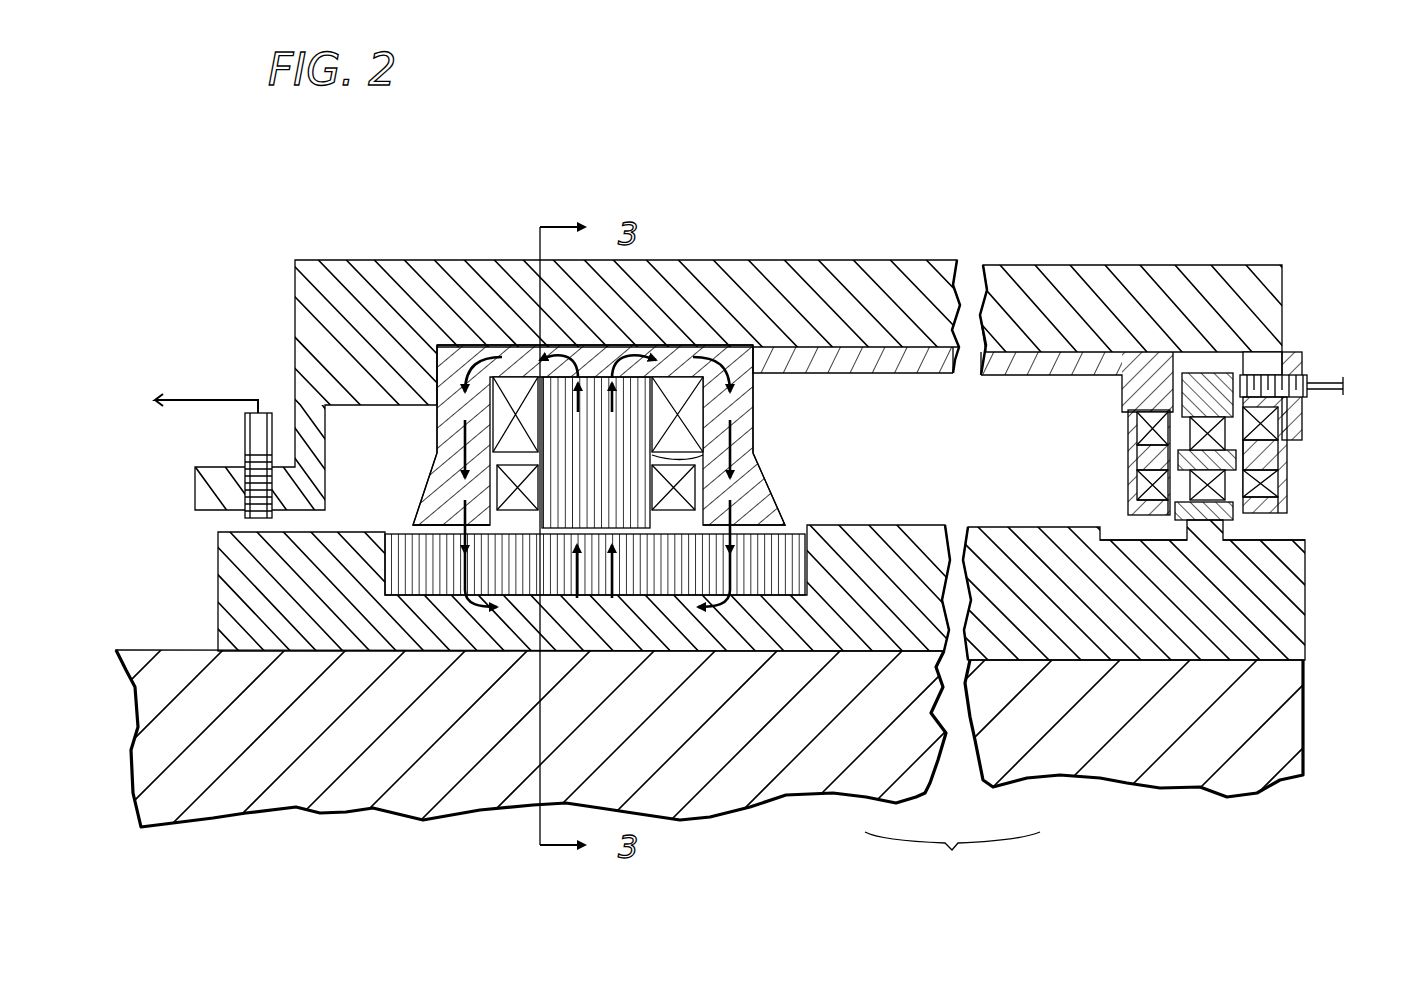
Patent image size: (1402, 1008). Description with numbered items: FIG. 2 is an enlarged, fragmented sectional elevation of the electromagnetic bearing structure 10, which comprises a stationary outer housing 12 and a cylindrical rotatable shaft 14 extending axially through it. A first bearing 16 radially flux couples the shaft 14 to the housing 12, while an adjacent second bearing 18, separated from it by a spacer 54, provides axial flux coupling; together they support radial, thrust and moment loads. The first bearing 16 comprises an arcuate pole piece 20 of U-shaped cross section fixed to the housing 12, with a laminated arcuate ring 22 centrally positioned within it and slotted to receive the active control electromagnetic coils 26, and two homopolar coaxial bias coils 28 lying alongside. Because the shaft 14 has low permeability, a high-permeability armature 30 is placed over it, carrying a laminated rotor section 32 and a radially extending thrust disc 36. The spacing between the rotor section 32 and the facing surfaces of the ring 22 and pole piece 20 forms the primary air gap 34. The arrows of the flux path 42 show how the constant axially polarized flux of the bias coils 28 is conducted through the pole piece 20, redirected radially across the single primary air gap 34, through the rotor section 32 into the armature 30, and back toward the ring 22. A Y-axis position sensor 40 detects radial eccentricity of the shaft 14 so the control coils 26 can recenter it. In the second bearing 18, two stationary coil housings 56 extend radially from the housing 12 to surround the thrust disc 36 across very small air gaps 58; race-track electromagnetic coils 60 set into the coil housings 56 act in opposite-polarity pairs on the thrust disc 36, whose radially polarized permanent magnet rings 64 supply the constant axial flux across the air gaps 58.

The electromagnetic bearing structure 10 is at (840, 228).
The stationary outer housing 12 is at (948, 262).
The rotatable shaft 14 is at (365, 800).
The first bearing 16 is at (660, 333).
The second bearing 18 is at (1300, 325).
The arcuate pole piece 20 is at (757, 422).
The arcuate ring 22 is at (700, 455).
The active control electromagnetic coils 26 is at (485, 490).
The homopolar coaxial bias coils 28 is at (483, 437).
The armature 30 is at (235, 607).
The rotor section 32 is at (867, 538).
The primary air gap 34 is at (413, 525).
The thrust disc 36 is at (1213, 350).
The Y-axis position sensor 40 is at (245, 443).
The magnetic flux path 42 is at (500, 345).
The spacer 54 is at (1005, 378).
The stationary coil housings 56 is at (1130, 478).
The air gaps 58 is at (1162, 530).
The electromagnetic coils 60 is at (1130, 422).
The permanent magnet rings 64 is at (1136, 492).